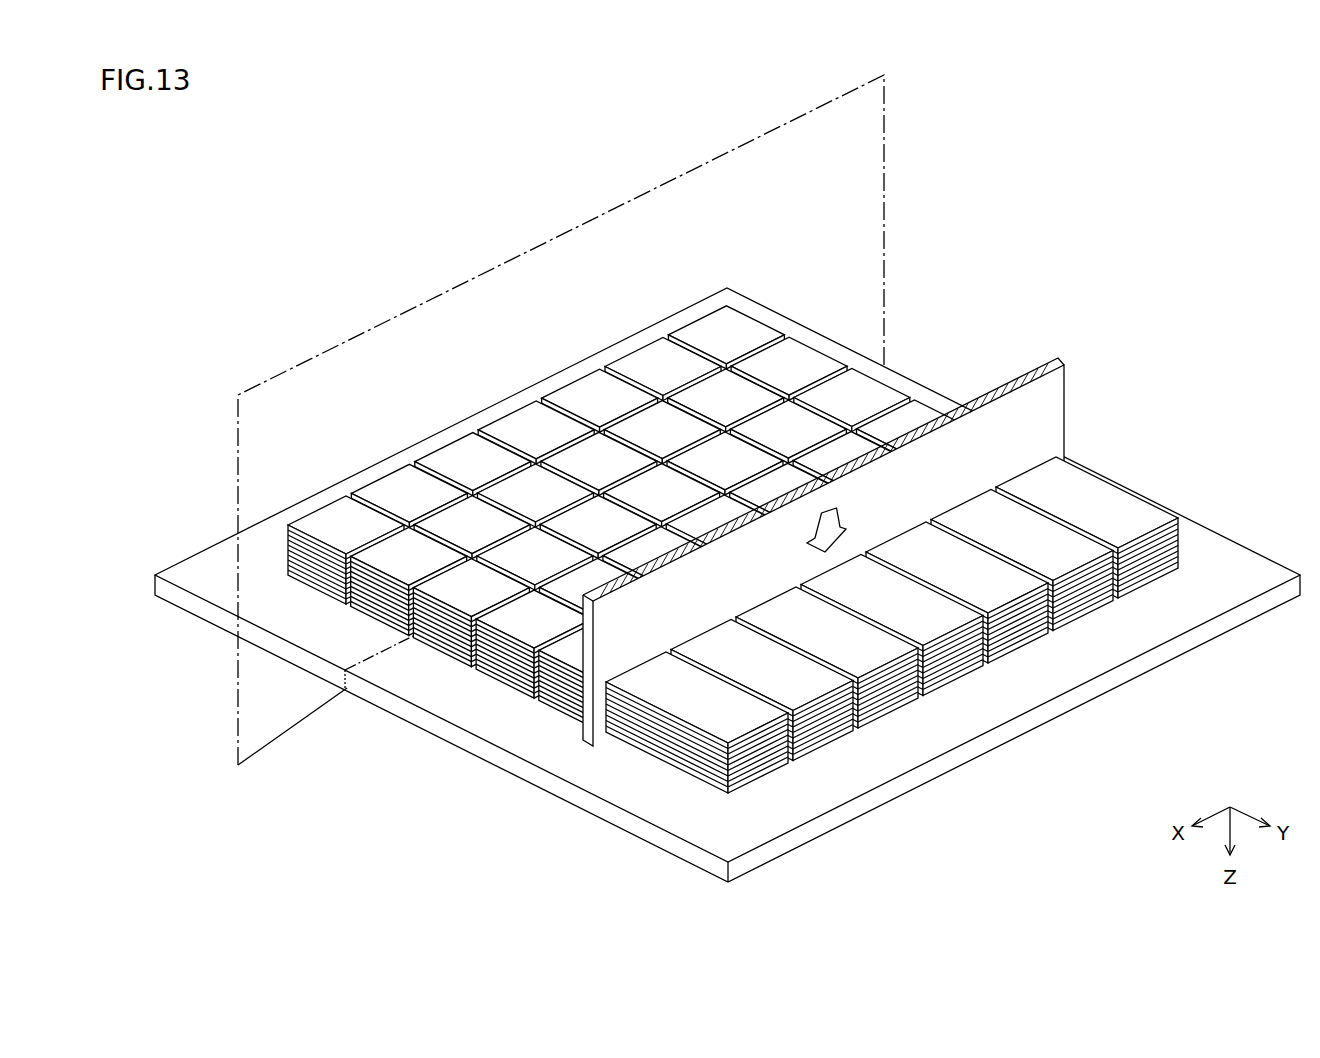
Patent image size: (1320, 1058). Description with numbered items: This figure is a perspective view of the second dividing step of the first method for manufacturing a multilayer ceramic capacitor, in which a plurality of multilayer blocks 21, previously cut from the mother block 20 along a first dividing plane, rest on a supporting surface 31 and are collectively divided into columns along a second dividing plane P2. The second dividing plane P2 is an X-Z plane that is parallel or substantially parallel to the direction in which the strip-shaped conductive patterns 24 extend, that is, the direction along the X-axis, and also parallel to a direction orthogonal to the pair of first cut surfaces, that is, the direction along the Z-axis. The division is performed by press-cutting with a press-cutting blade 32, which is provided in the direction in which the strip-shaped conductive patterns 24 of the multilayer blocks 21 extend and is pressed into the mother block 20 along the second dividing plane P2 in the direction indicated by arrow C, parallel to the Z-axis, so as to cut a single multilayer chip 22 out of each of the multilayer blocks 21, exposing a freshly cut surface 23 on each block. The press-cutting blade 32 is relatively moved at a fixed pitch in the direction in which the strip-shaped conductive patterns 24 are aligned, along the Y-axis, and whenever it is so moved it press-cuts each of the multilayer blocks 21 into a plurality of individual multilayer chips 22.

The mother block 20 is at (622, 524).
The multilayer block 21 is at (892, 590).
The multilayer chip 22 is at (543, 610).
The cut surface of laminated block 23 is at (930, 633).
The strip-shaped conductive pattern 24 is at (346, 550).
The stage 31 is at (1210, 600).
The press-cutting blade 32 is at (708, 584).
The arrow C is at (840, 517).
The second dividing plane P2 is at (295, 368).